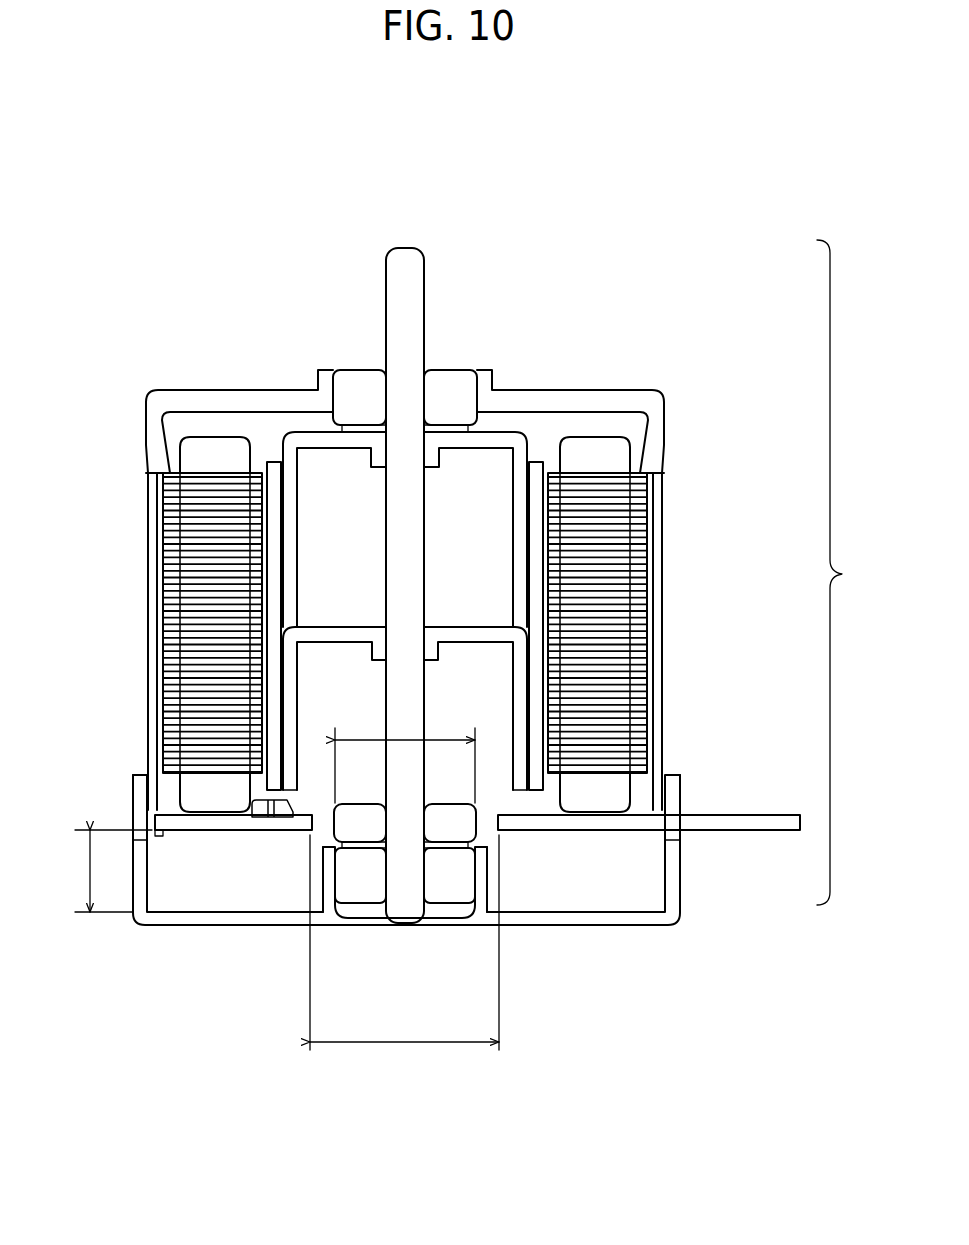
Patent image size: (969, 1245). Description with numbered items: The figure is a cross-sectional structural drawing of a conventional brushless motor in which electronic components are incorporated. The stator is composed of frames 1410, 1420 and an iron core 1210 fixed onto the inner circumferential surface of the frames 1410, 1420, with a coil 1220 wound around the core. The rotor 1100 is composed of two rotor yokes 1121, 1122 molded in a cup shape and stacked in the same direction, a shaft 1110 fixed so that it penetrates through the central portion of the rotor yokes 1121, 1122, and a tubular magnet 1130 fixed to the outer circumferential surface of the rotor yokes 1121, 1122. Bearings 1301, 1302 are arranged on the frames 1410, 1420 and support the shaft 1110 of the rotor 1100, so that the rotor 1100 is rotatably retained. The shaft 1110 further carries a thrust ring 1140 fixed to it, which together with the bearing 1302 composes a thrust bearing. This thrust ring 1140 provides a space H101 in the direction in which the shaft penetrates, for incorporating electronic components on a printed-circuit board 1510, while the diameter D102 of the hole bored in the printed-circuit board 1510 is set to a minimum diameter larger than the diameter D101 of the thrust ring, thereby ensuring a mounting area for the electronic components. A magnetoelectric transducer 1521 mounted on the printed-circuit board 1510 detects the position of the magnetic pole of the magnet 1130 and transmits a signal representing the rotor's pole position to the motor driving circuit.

The rotor 1100 is at (855, 572).
The shaft 1110 is at (425, 313).
The rotor yoke 1121 is at (522, 444).
The rotor yoke 1122 is at (518, 790).
The magnet 1130 is at (545, 780).
The thrust ring 1140 is at (462, 803).
The iron core 1210 is at (177, 587).
The coil 1220 is at (183, 443).
The bearing 1301 is at (360, 370).
The bearing 1302 is at (447, 902).
The frame 1410 is at (157, 390).
The frame 1420 is at (135, 927).
The printed-circuit board 1510 is at (535, 830).
The magnetoelectric transducer 1521 is at (265, 817).
The diameter of the thrust ring D101 is at (370, 740).
The diameter of the hole bored in the printed-circuit board D102 is at (404, 942).
The space in the shaft direction H101 is at (90, 828).